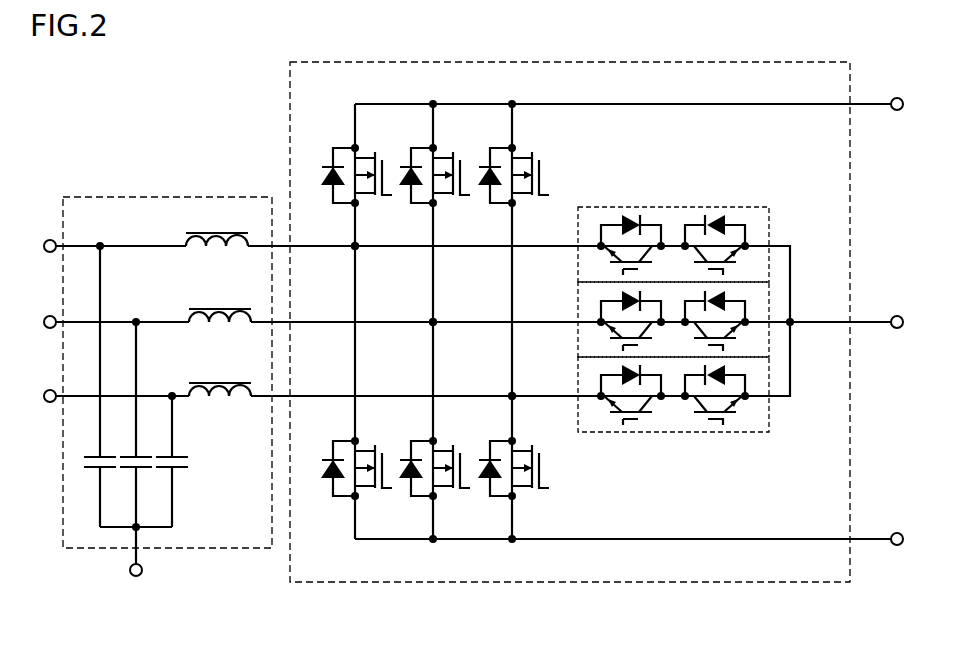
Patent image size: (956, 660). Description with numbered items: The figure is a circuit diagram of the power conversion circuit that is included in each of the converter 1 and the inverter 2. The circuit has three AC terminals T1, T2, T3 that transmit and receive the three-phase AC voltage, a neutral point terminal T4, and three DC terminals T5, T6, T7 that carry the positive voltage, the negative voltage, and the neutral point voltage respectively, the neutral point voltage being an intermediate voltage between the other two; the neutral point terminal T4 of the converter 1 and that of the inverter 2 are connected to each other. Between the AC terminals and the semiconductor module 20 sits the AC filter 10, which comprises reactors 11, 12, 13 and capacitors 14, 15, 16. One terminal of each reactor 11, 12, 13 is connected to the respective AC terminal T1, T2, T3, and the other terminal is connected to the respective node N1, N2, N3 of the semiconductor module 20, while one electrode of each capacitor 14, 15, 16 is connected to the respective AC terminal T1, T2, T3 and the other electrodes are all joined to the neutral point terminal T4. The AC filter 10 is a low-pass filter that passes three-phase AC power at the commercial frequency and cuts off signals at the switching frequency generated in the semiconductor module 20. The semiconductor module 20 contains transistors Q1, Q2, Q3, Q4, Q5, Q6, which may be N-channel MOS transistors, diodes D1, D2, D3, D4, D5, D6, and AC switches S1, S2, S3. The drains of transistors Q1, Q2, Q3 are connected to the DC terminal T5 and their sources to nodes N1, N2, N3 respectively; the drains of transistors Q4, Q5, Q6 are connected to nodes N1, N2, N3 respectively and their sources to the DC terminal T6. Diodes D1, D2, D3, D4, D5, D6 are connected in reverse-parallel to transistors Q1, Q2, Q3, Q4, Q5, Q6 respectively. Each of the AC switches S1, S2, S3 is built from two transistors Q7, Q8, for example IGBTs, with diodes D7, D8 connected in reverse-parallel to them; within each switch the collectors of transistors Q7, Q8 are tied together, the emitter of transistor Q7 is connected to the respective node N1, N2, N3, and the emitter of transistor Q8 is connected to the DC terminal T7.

The converter 1 is at (130, 108).
The inverter 2 is at (130, 108).
The AC filter 10 is at (128, 197).
The reactor 11 is at (200, 233).
The reactor 12 is at (200, 309).
The reactor 13 is at (200, 383).
The capacitor 14 is at (93, 456).
The capacitor 15 is at (128, 456).
The capacitor 16 is at (184, 456).
The semiconductor module 20 is at (376, 62).
The AC terminal T1 is at (47, 240).
The AC terminal T2 is at (47, 316).
The AC terminal T3 is at (47, 390).
The neutral point terminal T4 is at (136, 577).
The DC terminal T5 is at (900, 97).
The DC terminal T6 is at (900, 532).
The DC terminal T7 is at (900, 315).
The diode D1 is at (330, 166).
The diode D2 is at (408, 166).
The diode D3 is at (487, 166).
The diode D4 is at (330, 459).
The diode D5 is at (408, 459).
The diode D6 is at (487, 459).
The diode D7 is at (626, 214).
The diode D8 is at (713, 214).
The transistor Q1 is at (372, 198).
The transistor Q2 is at (450, 198).
The transistor Q3 is at (529, 198).
The transistor Q4 is at (372, 491).
The transistor Q5 is at (450, 491).
The transistor Q6 is at (529, 491).
The transistor Q7 is at (643, 270).
The transistor Q8 is at (730, 270).
The node N1 is at (351, 249).
The node N2 is at (429, 325).
The node N3 is at (508, 394).
The AC switch S1 is at (771, 221).
The AC switch S2 is at (771, 291).
The AC switch S3 is at (771, 425).